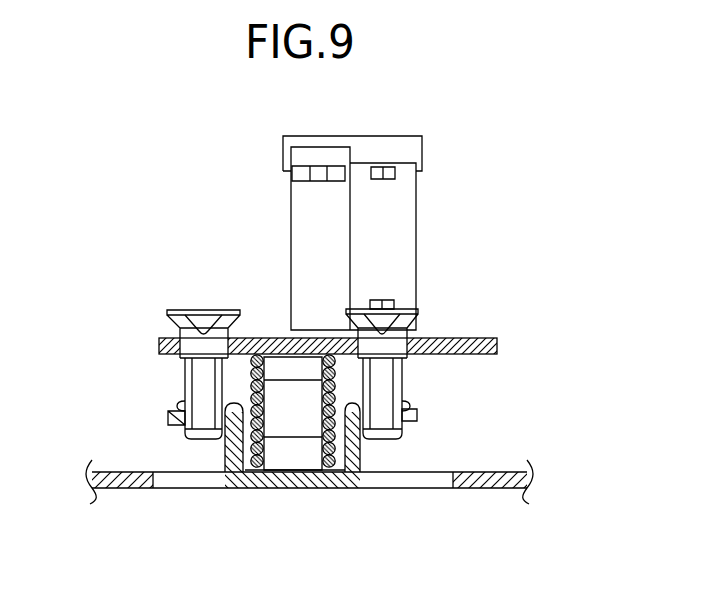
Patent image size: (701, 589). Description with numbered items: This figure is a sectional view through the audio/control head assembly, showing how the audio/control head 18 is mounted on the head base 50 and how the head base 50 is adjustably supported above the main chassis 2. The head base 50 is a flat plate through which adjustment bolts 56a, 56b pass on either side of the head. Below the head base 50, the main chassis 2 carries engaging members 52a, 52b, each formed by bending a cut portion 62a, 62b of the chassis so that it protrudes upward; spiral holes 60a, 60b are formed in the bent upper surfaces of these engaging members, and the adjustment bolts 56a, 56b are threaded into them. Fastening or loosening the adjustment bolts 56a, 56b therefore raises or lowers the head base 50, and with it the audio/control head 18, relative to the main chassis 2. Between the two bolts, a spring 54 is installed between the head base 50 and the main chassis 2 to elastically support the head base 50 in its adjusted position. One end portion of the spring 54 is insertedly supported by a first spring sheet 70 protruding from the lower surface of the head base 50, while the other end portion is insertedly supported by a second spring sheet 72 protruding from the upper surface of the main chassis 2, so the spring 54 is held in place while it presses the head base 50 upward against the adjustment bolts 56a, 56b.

The audio/control head 18 is at (330, 212).
The head base 50 is at (497, 346).
The adjustment bolt 56a is at (418, 308).
The adjustment bolt 56b is at (200, 310).
The spiral hole 60a is at (404, 402).
The spiral hole 60b is at (183, 401).
The engaging member 52a is at (417, 415).
The engaging member 52b is at (168, 413).
The first spring sheet 70 is at (282, 364).
The second spring sheet 72 is at (291, 455).
The spring 54 is at (345, 452).
The cut portion 62a is at (452, 480).
The cut portion 62b is at (155, 480).
The main chassis 2 is at (478, 488).